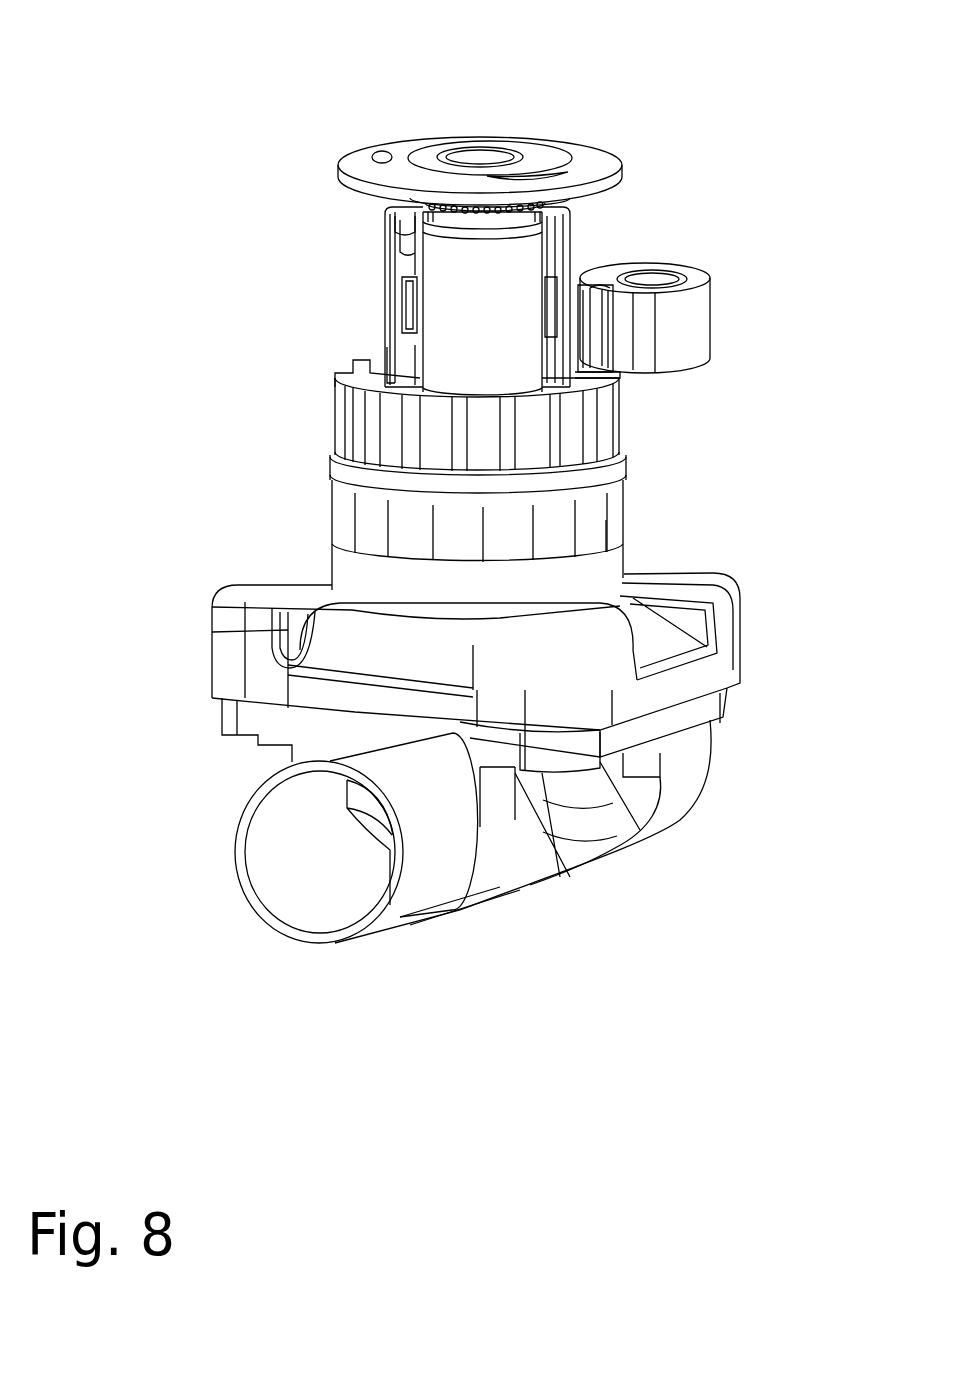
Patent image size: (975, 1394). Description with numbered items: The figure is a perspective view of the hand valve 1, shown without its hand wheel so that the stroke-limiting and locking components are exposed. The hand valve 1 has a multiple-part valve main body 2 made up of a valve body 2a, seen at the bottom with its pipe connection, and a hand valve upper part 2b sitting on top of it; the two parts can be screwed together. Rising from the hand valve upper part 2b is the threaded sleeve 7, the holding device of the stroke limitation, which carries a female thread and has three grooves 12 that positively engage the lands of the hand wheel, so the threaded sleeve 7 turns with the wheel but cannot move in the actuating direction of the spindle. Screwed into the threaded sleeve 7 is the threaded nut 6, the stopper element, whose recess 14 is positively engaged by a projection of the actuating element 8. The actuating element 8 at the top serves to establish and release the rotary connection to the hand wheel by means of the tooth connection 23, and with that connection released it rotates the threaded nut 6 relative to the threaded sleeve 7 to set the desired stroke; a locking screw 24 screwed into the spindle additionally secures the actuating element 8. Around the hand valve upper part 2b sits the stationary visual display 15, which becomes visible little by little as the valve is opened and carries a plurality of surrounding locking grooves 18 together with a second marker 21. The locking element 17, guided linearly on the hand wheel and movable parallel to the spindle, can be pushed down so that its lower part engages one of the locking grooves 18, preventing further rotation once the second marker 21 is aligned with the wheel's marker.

The hand valve 1 is at (206, 63).
The valve main body 2 is at (240, 763).
The valve body 2a is at (331, 866).
The hand valve upper part 2b is at (403, 659).
The threaded nut 6 is at (405, 262).
The threaded sleeve 7 is at (492, 313).
The actuating element 8 is at (596, 160).
The groove of the threaded sleeve 12 is at (410, 306).
The recess of the threaded nut 14 is at (420, 230).
The visual display 15 is at (613, 512).
The locking element 17 is at (696, 310).
The locking groove 18 is at (580, 437).
The second marker 21 is at (606, 534).
The tooth connection 23 is at (376, 203).
The locking screw 24 is at (505, 153).